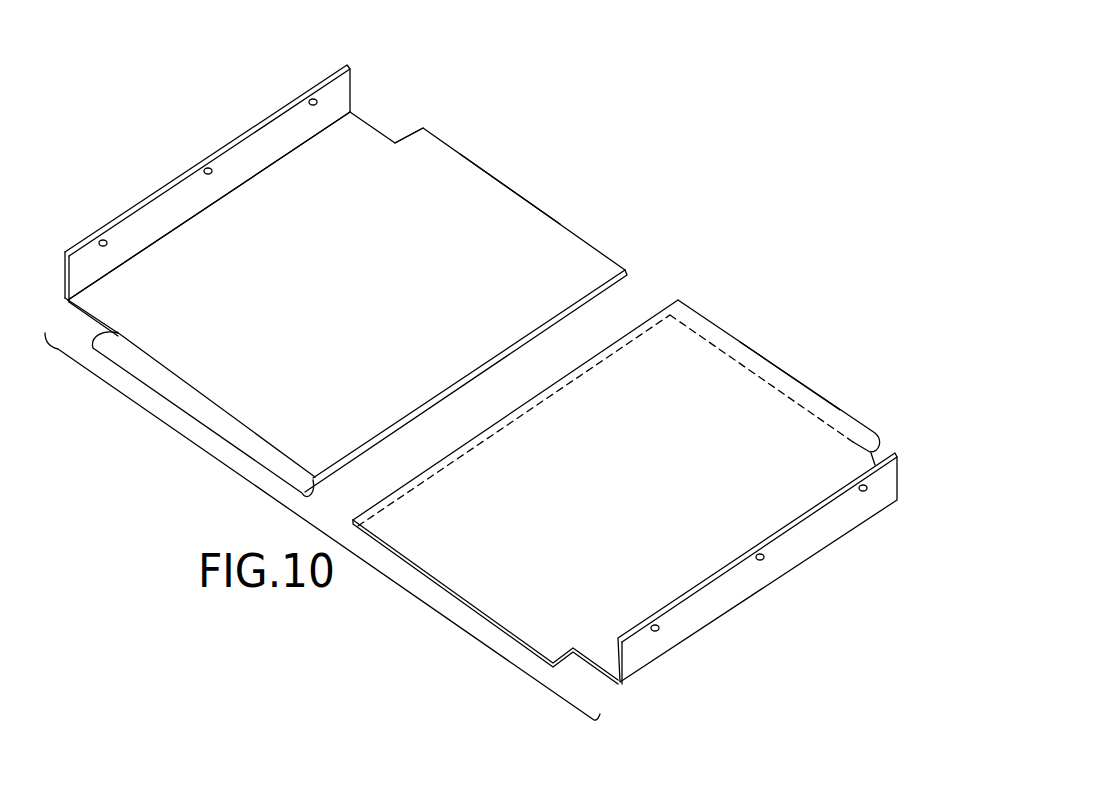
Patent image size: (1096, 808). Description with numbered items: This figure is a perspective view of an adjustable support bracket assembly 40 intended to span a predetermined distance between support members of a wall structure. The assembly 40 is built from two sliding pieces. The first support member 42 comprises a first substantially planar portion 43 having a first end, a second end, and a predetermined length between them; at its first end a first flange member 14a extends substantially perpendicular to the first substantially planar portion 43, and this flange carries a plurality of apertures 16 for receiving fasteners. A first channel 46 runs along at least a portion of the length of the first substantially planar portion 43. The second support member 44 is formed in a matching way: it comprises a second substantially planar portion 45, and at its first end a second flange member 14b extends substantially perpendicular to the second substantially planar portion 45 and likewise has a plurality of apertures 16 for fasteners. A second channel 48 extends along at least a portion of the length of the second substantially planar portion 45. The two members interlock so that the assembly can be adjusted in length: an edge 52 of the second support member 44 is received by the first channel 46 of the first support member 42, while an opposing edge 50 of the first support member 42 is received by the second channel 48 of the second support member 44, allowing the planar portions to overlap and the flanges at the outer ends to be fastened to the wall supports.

The support bracket assembly 40 is at (666, 128).
The first support member 42 is at (232, 401).
The second support member 44 is at (592, 550).
The first flange member 14a is at (255, 145).
The second flange member 14b is at (808, 537).
The apertures 16 is at (206, 170).
The first substantially planar portion 43 is at (380, 163).
The second substantially planar portion 45 is at (672, 340).
The first channel 46 is at (113, 366).
The second channel 48 is at (792, 378).
The opposing edge 50 is at (507, 187).
The edge 52 is at (425, 575).